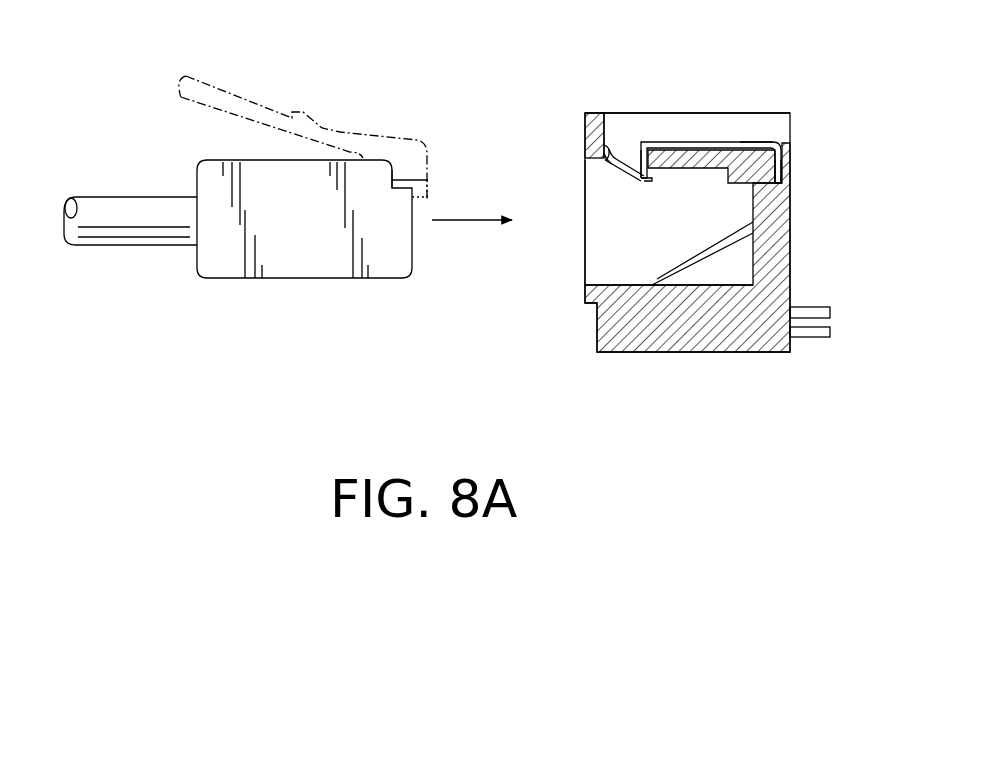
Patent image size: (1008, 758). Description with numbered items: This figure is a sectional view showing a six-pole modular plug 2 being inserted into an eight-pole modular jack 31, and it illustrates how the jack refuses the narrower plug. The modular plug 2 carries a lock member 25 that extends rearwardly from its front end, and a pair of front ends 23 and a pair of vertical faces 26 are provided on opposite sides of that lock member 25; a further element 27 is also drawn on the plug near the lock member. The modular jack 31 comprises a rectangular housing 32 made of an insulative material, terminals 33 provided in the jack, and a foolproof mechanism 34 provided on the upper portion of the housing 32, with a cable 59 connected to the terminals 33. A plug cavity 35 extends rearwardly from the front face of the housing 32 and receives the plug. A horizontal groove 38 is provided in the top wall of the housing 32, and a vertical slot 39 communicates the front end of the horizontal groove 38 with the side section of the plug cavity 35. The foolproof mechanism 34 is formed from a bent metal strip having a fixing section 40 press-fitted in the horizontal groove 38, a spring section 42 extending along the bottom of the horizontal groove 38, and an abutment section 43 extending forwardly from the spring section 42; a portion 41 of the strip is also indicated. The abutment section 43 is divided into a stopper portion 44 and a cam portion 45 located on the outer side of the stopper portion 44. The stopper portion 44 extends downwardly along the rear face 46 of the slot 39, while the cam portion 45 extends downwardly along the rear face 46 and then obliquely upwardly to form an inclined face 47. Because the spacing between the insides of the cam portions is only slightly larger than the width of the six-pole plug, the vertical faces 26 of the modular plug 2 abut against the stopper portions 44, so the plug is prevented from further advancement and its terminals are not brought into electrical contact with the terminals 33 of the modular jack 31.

The modular plug 2 is at (158, 160).
The lock member 25 is at (231, 100).
The latch projection 27 is at (393, 165).
The front ends 23 is at (406, 168).
The vertical faces 26 is at (430, 180).
The modular jack 31 is at (578, 324).
The housing 32 is at (668, 326).
The terminals 33 is at (707, 256).
The foolproof mechanism 34 is at (697, 110).
The plug cavity 35 is at (636, 247).
The horizontal grooves 38 is at (772, 113).
The vertical slots 39 is at (615, 143).
The fixing section 40 is at (780, 172).
The contact top portion 41 is at (752, 140).
The spring section 42 is at (722, 147).
The abutment section 43 is at (596, 150).
The stopper portion 44 is at (652, 180).
The cam portion 45 is at (628, 183).
The rear face 46 is at (628, 150).
The inclined face 47 is at (606, 162).
The cable 59 is at (813, 310).